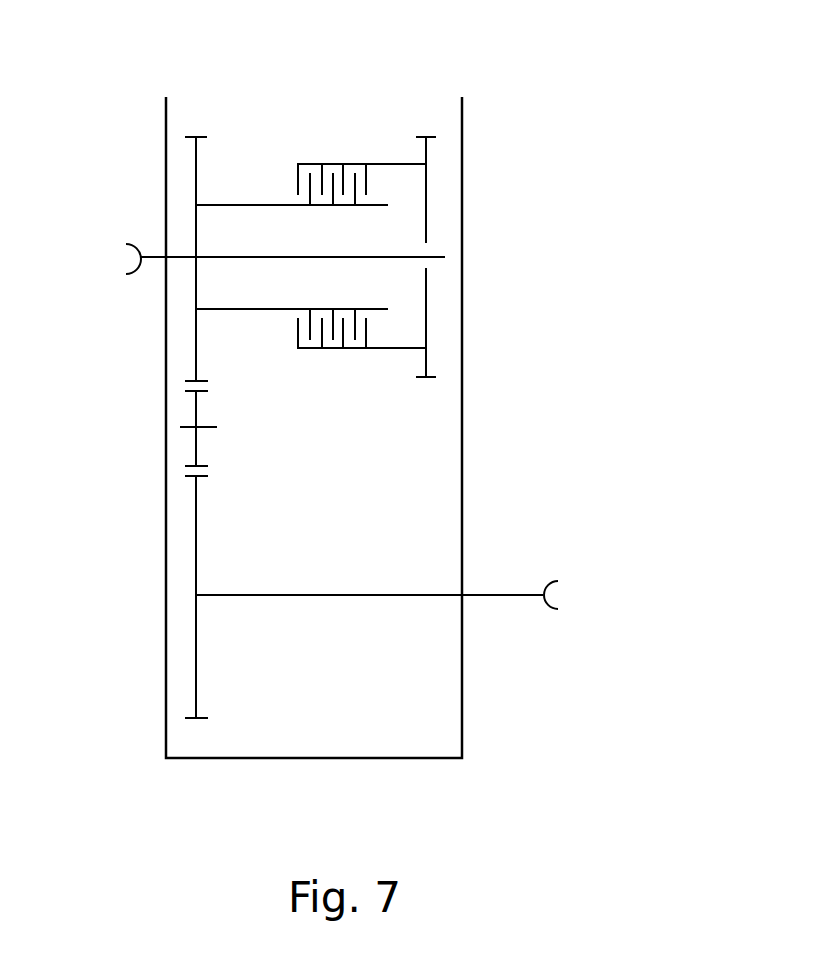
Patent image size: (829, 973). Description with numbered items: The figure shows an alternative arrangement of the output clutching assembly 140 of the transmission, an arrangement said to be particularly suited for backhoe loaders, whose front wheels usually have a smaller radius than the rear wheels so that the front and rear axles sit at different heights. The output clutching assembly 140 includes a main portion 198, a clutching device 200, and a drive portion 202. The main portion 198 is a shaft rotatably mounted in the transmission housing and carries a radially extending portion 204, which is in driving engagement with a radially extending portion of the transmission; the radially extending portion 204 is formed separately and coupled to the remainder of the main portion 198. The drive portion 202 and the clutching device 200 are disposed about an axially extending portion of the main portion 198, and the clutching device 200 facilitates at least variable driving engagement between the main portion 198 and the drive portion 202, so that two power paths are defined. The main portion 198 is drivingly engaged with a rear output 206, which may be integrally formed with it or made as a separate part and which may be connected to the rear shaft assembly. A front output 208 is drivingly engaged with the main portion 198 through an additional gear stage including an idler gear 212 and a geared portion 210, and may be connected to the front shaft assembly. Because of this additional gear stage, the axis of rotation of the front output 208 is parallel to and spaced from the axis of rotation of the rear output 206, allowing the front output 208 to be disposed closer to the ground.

The output clutching assembly 140 is at (532, 66).
The main portion 198 is at (225, 205).
The clutching device 200 is at (348, 124).
The drive portion 202 is at (426, 296).
The radially extending portion 204 is at (196, 365).
The rear output 206 is at (128, 240).
The front output 208 is at (553, 615).
The geared portion 210 is at (196, 663).
The idler gear 212 is at (198, 448).